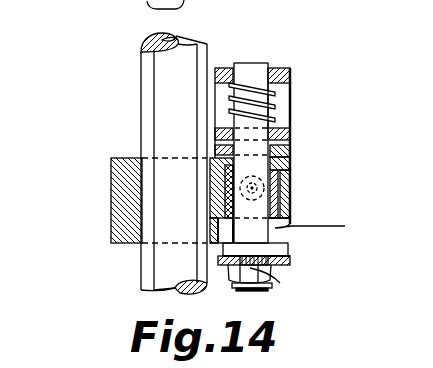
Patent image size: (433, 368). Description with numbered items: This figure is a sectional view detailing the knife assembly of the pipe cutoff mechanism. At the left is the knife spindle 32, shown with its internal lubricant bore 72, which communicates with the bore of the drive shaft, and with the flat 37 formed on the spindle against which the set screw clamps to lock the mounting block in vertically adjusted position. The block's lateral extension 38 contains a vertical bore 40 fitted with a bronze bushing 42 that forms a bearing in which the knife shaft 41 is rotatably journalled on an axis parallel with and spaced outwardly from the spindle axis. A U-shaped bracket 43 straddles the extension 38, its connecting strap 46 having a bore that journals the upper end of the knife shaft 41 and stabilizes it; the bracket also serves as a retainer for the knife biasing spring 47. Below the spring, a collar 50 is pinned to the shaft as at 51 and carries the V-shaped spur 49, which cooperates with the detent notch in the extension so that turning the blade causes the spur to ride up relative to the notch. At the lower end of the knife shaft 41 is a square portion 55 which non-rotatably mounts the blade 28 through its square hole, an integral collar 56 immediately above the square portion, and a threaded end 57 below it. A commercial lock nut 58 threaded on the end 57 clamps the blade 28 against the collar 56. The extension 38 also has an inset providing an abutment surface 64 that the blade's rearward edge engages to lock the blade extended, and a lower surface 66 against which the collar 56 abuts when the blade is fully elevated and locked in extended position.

The knife spindle 32 is at (136, 63).
The bore 72 is at (168, 41).
The flat 37 is at (163, 113).
The connecting strap 46 is at (233, 68).
The knife shaft 41 is at (252, 67).
The U-shaped bracket 43 is at (291, 92).
The knife biasing spring 47 is at (276, 107).
The collar 50 is at (291, 137).
The pin 51 is at (291, 150).
The V-shaped spur 49 is at (291, 166).
The vertical bore 40 is at (283, 190).
The bronze bushing 42 is at (291, 196).
The lateral extension 38 is at (291, 217).
The lower surface of inset 66 is at (345, 226).
The abutment surface 64 is at (214, 236).
The integral collar 56 is at (289, 247).
The blade 28 is at (291, 262).
The square portion 55 is at (281, 274).
The lock nut 58 is at (273, 287).
The threaded end 57 is at (255, 292).